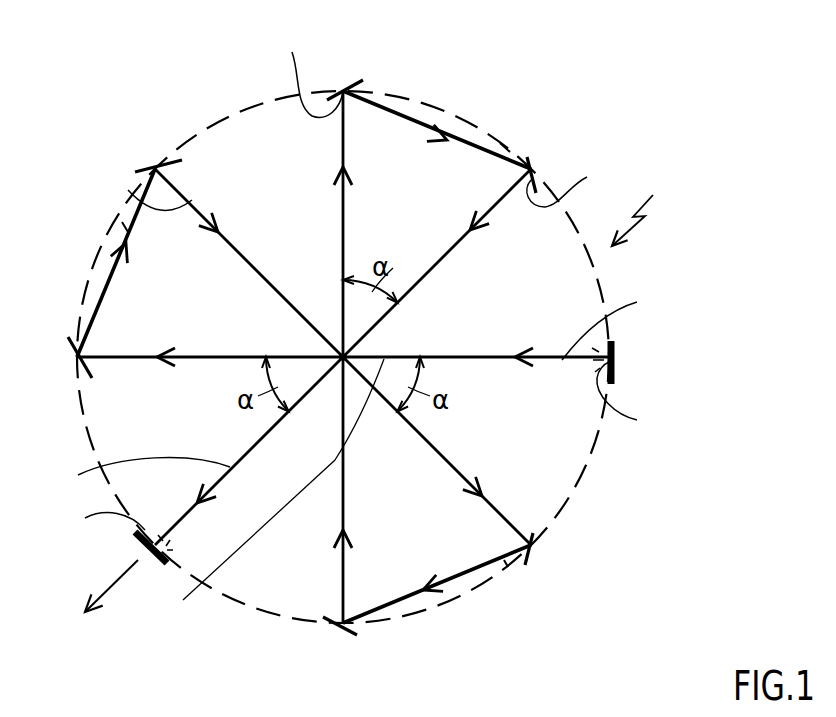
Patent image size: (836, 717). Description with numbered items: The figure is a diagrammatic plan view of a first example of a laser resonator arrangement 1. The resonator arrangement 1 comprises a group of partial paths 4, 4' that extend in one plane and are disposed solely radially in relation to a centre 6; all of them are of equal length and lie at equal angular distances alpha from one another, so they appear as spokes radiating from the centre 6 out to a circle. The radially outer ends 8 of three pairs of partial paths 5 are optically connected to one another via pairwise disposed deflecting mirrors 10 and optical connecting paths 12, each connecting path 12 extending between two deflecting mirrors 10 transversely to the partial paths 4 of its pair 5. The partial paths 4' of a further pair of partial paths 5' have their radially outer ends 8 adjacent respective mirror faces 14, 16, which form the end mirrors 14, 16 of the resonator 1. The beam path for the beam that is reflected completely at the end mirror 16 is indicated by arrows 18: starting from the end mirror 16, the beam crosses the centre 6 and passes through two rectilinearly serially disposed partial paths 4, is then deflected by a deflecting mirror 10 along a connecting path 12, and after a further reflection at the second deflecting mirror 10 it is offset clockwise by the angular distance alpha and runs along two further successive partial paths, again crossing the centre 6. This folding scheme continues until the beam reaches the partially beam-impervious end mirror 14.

The laser resonator arrangement 1 is at (642, 210).
The partial path 4 is at (330, 377).
The partial path of the further pair 4' is at (355, 388).
The pair of partial paths 5 is at (343, 357).
The further pair of partial paths 5' is at (234, 497).
The centre 6 is at (343, 360).
The radially outer end 8 is at (362, 279).
The deflecting mirror 10 is at (345, 90).
The optical connecting path 12 is at (508, 162).
The end mirror 14 is at (143, 545).
The end mirror 16 is at (613, 360).
The arrows 18 is at (443, 128).